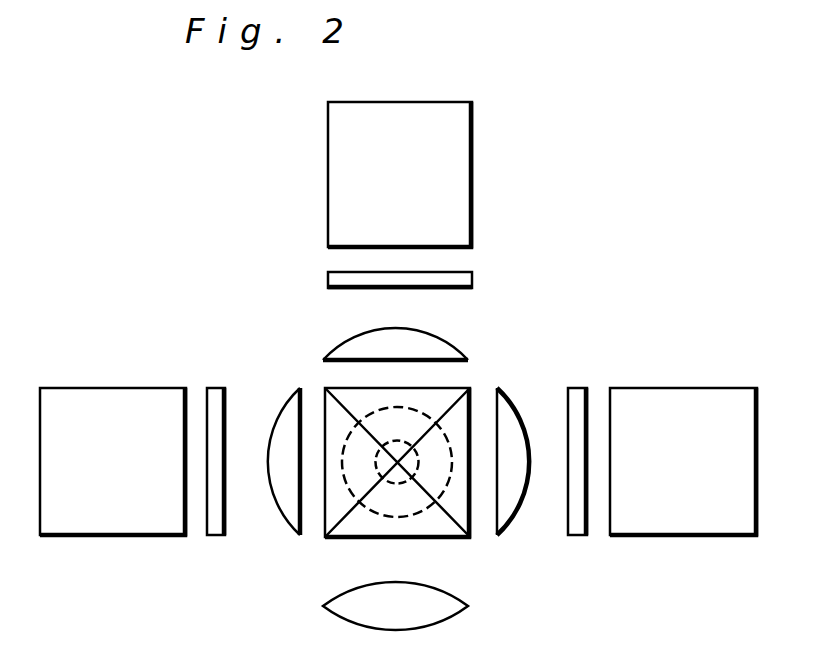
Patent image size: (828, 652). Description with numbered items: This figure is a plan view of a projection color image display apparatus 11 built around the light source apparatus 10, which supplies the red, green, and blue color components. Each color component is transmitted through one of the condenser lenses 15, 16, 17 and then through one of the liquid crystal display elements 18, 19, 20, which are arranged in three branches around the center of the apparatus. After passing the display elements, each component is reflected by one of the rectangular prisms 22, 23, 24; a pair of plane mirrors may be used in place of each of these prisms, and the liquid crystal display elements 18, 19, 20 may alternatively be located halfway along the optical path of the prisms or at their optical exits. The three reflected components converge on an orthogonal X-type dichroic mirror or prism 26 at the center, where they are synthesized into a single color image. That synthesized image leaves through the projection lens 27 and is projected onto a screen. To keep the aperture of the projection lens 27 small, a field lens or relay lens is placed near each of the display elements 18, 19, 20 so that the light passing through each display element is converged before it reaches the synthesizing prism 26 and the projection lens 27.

The light source apparatus 10 is at (288, 352).
The projection image display apparatus 11 is at (117, 203).
The condenser lens 15 is at (508, 497).
The condenser lens 16 is at (423, 348).
The condenser lens 17 is at (280, 488).
The liquid crystal display element 18 is at (577, 400).
The liquid crystal display element 19 is at (455, 280).
The liquid crystal display element 20 is at (213, 410).
The rectangular prism 22 is at (660, 402).
The rectangular prism 23 is at (450, 173).
The rectangular prism 24 is at (113, 408).
The orthogonal X-type dichroic mirror or prism 26 is at (357, 520).
The projection lens 27 is at (433, 603).